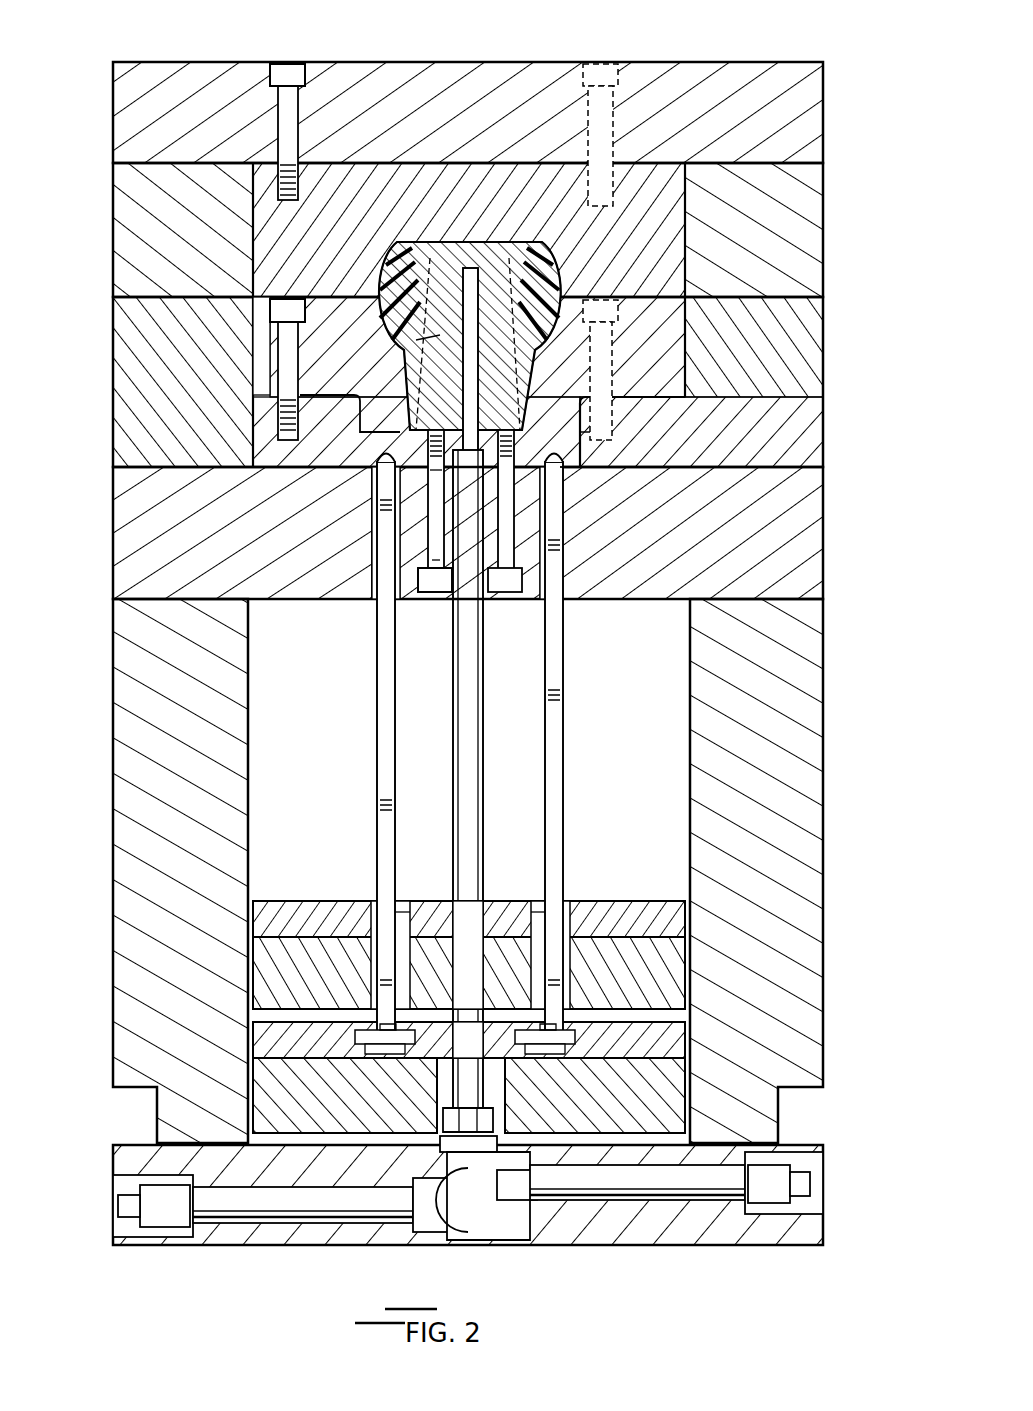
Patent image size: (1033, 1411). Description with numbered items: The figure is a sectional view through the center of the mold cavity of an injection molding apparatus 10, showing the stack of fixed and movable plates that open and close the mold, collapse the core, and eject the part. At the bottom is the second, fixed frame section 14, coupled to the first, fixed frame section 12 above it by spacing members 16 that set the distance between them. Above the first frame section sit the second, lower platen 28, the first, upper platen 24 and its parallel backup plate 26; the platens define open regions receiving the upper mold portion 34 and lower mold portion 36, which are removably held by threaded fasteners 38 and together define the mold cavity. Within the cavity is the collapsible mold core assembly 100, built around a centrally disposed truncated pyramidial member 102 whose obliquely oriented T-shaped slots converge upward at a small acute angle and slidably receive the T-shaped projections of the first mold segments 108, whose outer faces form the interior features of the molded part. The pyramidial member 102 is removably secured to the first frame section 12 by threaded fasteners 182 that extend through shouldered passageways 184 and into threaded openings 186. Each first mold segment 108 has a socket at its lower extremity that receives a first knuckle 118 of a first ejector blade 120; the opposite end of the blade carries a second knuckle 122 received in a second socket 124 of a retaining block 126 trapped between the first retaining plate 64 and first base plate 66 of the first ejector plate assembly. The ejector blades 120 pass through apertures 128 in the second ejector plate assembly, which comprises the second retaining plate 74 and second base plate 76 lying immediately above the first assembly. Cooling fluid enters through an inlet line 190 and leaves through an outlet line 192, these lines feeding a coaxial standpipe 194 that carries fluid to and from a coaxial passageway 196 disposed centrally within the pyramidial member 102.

The injection molding apparatus 10 is at (785, 45).
The first, fixed clamp plate or frame section 12 is at (805, 530).
The second, fixed support plate or frame section 14 is at (705, 1230).
The spacing members 16 is at (800, 700).
The first, upper platen 24 is at (805, 240).
The backup plate 26 is at (805, 115).
The stripper plate or second, lower platen 28 is at (800, 385).
The upper mold portion 34 is at (640, 170).
The lower mold portion 36 is at (660, 345).
The threaded fasteners 38 is at (290, 70).
The first retaining plate 64 is at (680, 1040).
The first base plate 66 is at (680, 1110).
The second retaining plate 74 is at (620, 915).
The second base plate 76 is at (665, 972).
The collapsible mold core assembly 100 is at (476, 224).
The stanchion or truncated pyramidial member 102 is at (416, 345).
The first mold segments 108 is at (600, 458).
The first knuckle 118 is at (568, 467).
The first ejector blades 120 is at (378, 660).
The second knuckle 122 is at (372, 1045).
The second socket 124 is at (385, 1050).
The retaining block 126 is at (380, 1035).
The apertures 128 is at (545, 905).
The threaded fasteners 182 is at (470, 585).
The shouldered passageways 184 is at (435, 545).
The threaded openings 186 is at (436, 500).
The inlet line 190 is at (290, 1200).
The outlet line 192 is at (635, 1180).
The coaxial standpipe 194 is at (483, 730).
The coaxial passageway 196 is at (452, 420).